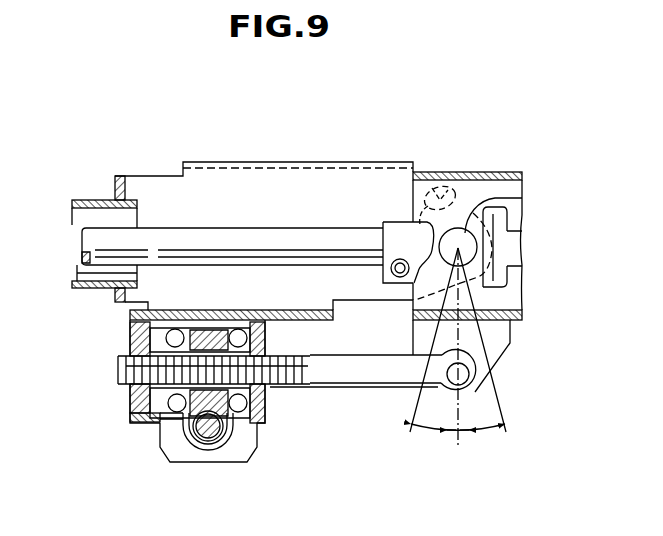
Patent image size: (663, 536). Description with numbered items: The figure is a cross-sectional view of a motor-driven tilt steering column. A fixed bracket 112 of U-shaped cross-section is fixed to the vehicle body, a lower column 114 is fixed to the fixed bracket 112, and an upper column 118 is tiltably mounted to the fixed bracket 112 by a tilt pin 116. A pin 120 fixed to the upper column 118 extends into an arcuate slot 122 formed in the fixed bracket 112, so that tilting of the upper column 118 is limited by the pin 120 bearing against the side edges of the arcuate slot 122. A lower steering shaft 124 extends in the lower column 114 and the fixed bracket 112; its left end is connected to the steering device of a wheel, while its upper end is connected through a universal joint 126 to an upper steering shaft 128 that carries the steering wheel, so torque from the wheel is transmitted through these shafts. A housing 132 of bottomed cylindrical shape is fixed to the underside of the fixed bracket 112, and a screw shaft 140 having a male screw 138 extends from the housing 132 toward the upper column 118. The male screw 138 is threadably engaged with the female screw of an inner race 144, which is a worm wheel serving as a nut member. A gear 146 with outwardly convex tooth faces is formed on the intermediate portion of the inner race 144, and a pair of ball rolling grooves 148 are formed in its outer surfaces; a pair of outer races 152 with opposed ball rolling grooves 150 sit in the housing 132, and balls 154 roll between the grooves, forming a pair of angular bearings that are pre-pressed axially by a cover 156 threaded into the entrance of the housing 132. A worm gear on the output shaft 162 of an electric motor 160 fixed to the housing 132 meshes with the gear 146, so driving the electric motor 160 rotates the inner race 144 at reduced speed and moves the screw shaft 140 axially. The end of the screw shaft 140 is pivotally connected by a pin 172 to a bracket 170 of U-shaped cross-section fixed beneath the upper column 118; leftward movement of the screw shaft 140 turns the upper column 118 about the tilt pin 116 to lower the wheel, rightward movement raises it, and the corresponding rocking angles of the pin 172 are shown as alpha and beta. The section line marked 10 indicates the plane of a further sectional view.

The section line 10- 10 is at (190, 197).
The fixed bracket 112 is at (237, 161).
The lower column 114 is at (76, 200).
The tilt pin 116 is at (509, 200).
The upper column 118 is at (492, 172).
The pin 120 is at (438, 171).
The arcuate slot 122 is at (412, 203).
The lower steering shaft 124 is at (317, 240).
The universal joint 126 is at (505, 275).
The upper steering shaft 128 is at (514, 253).
The housing 132 is at (265, 336).
The male screw 138 is at (298, 386).
The screw shaft 140 is at (363, 356).
The inner race 144 is at (232, 432).
The gear 146 is at (212, 316).
The ball rolling grooves 148 is at (200, 330).
The ball rolling grooves 150 is at (175, 318).
The outer races 152 is at (163, 420).
The balls 154 is at (178, 447).
The cover 156 is at (130, 416).
The electric motor 160 is at (220, 458).
The output shaft 162 is at (216, 436).
The bracket 170 is at (497, 346).
The pin 172 is at (467, 378).